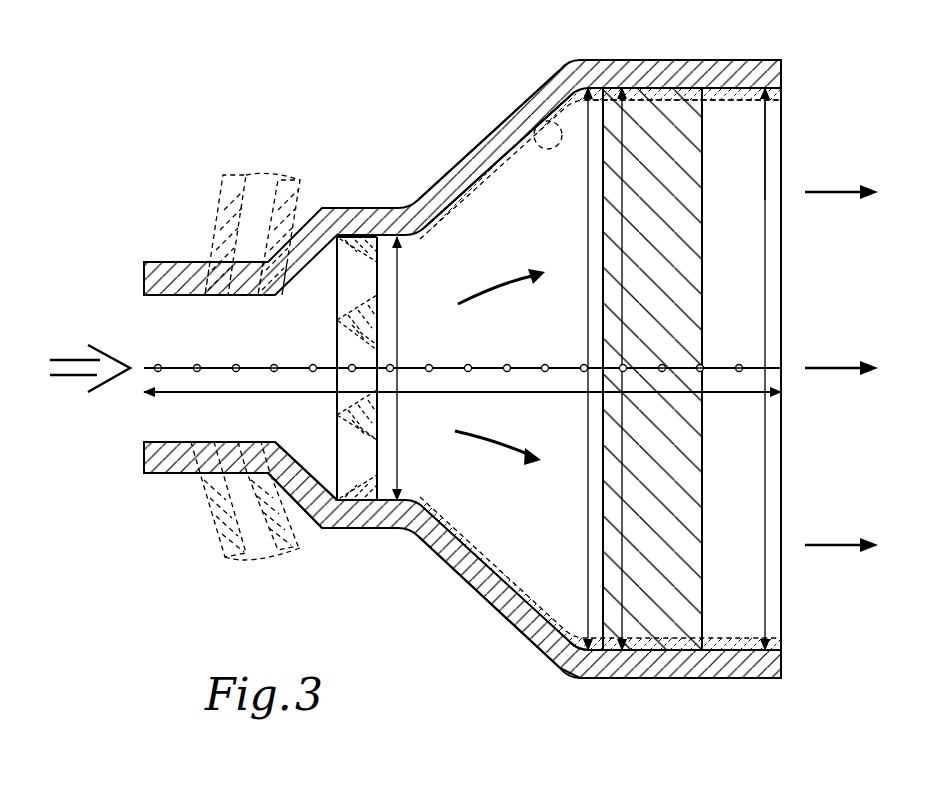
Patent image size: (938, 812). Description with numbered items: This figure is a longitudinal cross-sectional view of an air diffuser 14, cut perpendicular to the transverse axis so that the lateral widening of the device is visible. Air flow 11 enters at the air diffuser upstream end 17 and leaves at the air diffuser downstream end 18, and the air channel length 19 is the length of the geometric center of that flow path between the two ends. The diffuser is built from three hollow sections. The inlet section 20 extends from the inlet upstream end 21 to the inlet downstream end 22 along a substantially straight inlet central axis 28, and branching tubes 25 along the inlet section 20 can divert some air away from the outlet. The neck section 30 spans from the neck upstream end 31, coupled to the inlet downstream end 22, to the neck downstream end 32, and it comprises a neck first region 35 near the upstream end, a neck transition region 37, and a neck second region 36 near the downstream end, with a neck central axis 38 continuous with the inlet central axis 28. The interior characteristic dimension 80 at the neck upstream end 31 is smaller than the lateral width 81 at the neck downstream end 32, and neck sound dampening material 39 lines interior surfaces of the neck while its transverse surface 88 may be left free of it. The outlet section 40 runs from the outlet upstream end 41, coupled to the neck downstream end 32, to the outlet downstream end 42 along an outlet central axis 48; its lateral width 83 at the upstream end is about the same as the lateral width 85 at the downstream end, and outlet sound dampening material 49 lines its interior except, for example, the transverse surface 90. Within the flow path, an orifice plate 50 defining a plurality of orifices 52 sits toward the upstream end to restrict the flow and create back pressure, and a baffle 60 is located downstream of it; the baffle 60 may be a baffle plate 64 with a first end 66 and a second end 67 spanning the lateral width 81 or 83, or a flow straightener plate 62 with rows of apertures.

The air flow 11 is at (70, 378).
The air diffuser 14 is at (190, 72).
The air diffuser upstream end 17 is at (172, 262).
The air diffuser downstream end 18 is at (765, 60).
The air channel length 19 is at (243, 392).
The inlet section 20 is at (306, 520).
The inlet upstream end 21 is at (165, 476).
The inlet downstream end 22 is at (327, 530).
The branching tubes 25 is at (210, 545).
The inlet central axis 28 is at (245, 368).
The neck section 30 is at (463, 592).
The neck upstream end 31 is at (393, 530).
The neck downstream end 32 is at (567, 676).
The neck first region 35 is at (405, 200).
The neck second region 36 is at (566, 60).
The neck transition region 37 is at (462, 152).
The neck central axis 38 is at (468, 368).
The neck sound dampening material 39 is at (498, 190).
The outlet section 40 is at (748, 688).
The outlet upstream end 41 is at (602, 680).
The outlet downstream end 42 is at (773, 680).
The outlet central axis 48 is at (725, 368).
The outlet sound dampening material 49 is at (728, 100).
The orifice plate 50 is at (337, 322).
The orifices 52 is at (337, 302).
The baffle 60 is at (712, 410).
The flow straightener plate 62 is at (702, 432).
The baffle plate 64 is at (702, 478).
The first end 66 is at (660, 120).
The second end 67 is at (668, 652).
The characteristic dimension 80 is at (397, 282).
The lateral width 81 is at (586, 482).
The lateral width 83 is at (632, 540).
The lateral width 85 is at (765, 500).
The transverse surface 88 is at (518, 135).
The transverse surface 90 is at (741, 60).